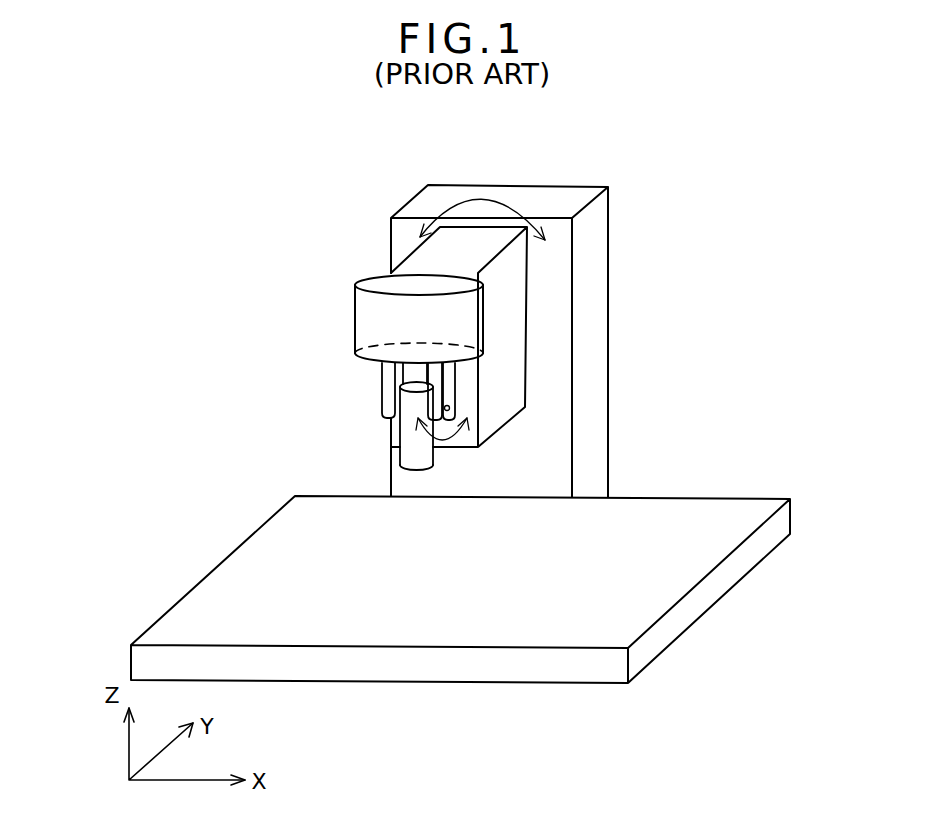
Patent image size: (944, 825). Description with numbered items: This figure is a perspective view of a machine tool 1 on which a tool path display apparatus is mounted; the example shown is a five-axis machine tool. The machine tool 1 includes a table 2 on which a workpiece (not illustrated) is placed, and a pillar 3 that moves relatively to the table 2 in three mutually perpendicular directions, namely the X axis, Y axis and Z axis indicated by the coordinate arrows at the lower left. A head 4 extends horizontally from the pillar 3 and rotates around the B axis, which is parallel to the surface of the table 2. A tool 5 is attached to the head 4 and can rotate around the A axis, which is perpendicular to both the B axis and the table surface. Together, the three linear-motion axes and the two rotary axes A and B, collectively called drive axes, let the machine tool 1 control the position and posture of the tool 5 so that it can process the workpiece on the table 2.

The machine tool 1 is at (460, 399).
The table 2 is at (650, 593).
The pillar 3 is at (598, 390).
The head 4 is at (330, 292).
The tool 5 is at (407, 437).
The A axis A is at (455, 442).
The B axis B is at (485, 198).